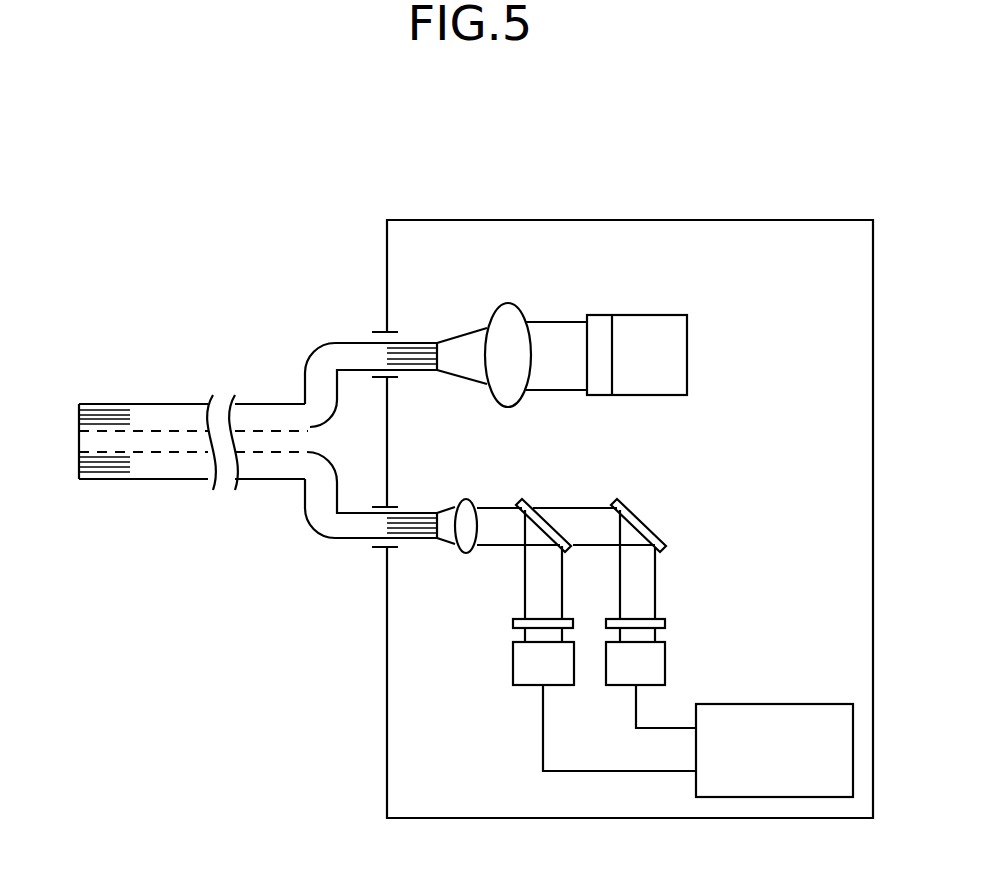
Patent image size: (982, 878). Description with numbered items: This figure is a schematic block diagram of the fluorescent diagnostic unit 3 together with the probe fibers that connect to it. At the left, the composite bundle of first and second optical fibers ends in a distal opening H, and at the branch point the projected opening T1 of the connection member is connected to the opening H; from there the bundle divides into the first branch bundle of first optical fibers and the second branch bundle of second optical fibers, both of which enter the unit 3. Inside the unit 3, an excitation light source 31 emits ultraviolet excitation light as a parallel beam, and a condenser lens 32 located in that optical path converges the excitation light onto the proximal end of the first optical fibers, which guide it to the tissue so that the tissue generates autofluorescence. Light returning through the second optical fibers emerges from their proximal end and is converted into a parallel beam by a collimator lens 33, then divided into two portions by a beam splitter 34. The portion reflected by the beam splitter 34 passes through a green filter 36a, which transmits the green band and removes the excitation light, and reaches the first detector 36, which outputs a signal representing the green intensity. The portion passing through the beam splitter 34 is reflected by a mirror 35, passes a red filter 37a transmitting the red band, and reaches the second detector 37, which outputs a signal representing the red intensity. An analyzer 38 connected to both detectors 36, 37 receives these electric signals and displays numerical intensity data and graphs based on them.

The fluorescent diagnostic unit 3 is at (773, 220).
The opening H is at (82, 438).
The projected opening T1 is at (300, 440).
The excitation light source 31 is at (659, 367).
The condenser lens 32 is at (508, 303).
The collimator lens 33 is at (466, 500).
The beam splitter 34 is at (530, 499).
The mirror 35 is at (622, 499).
The first detector 36 is at (513, 668).
The green filter 36a is at (513, 623).
The second detector 37 is at (665, 668).
The red filter 37a is at (665, 622).
The analyzer 38 is at (823, 704).